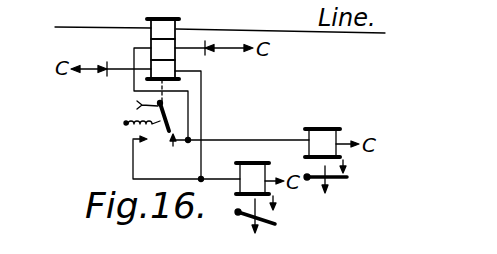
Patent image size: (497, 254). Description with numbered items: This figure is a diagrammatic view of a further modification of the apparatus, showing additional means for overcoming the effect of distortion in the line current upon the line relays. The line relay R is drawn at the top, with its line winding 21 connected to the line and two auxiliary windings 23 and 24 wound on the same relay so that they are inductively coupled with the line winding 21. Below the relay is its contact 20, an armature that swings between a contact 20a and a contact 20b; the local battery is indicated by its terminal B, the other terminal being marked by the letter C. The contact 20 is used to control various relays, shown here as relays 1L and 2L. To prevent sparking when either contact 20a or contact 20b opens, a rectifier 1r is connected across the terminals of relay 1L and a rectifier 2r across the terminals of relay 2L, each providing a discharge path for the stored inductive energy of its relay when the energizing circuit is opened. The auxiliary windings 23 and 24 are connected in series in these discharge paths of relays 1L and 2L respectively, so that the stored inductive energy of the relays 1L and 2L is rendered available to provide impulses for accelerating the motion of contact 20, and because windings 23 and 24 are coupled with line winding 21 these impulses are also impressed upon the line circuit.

The line relay R is at (163, 39).
The line winding 21 is at (150, 25).
The auxiliary winding 23 is at (175, 42).
The auxiliary winding 24 is at (174, 72).
The rectifier 2r is at (111, 54).
The rectifier 1r is at (205, 55).
The contact 20 is at (166, 116).
The battery terminal B is at (138, 106).
The contact 20a is at (173, 146).
The contact 20b is at (133, 146).
The relay 1L is at (331, 150).
The relay 2L is at (259, 187).